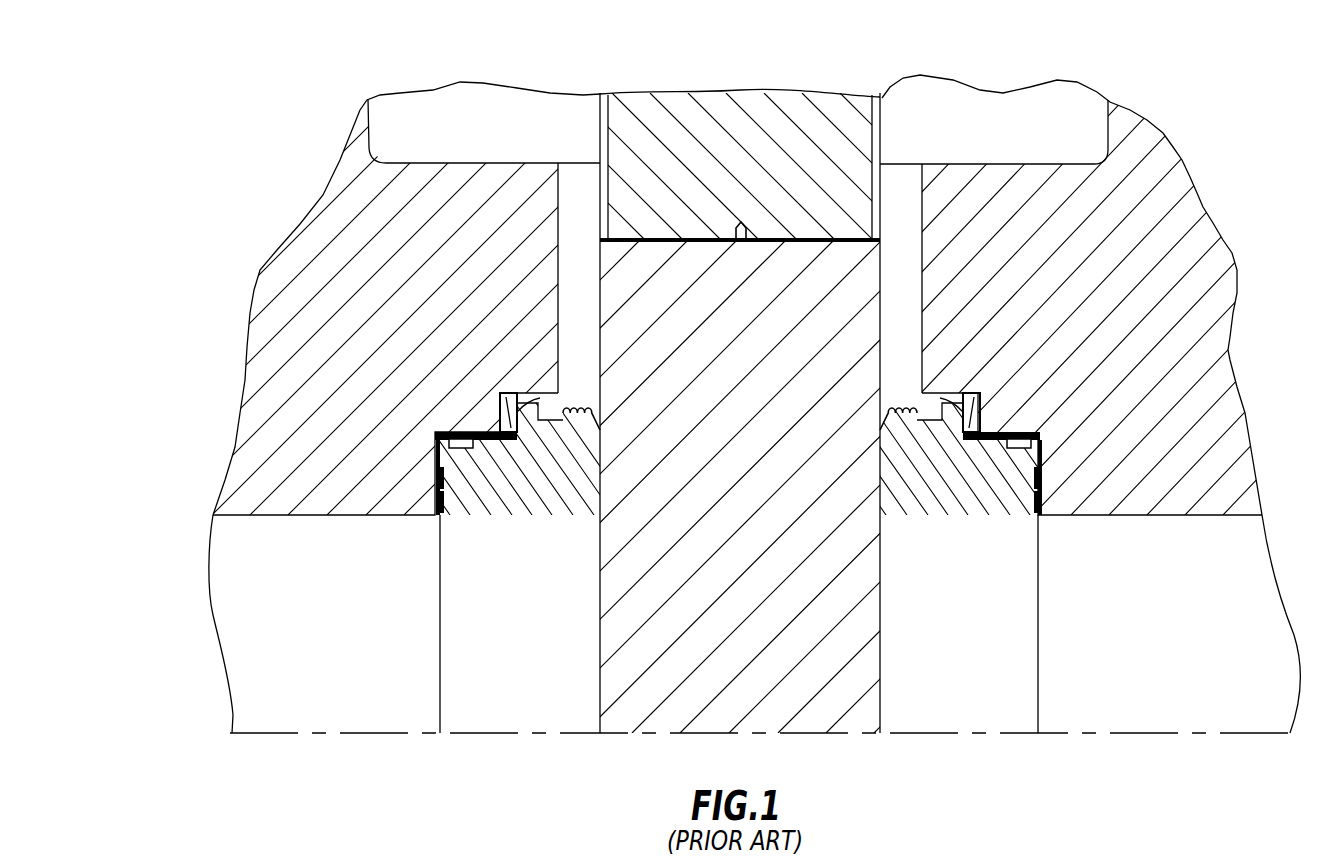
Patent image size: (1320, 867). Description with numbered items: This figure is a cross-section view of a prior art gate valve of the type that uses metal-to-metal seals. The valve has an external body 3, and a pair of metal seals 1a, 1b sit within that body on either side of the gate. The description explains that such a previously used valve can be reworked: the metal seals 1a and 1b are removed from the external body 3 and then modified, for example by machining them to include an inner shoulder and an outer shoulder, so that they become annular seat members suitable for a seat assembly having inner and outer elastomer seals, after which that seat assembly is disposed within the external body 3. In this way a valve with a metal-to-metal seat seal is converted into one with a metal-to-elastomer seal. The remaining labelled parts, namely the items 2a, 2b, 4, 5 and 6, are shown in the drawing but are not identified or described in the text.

The metal seal 1a is at (540, 493).
The metal seal 1b is at (940, 512).
The seal 2a is at (433, 434).
The seal 2b is at (1033, 432).
The external body 3 is at (322, 233).
The bearing housing 4 is at (555, 713).
The shaft 5 is at (739, 429).
The gap 6 is at (583, 198).